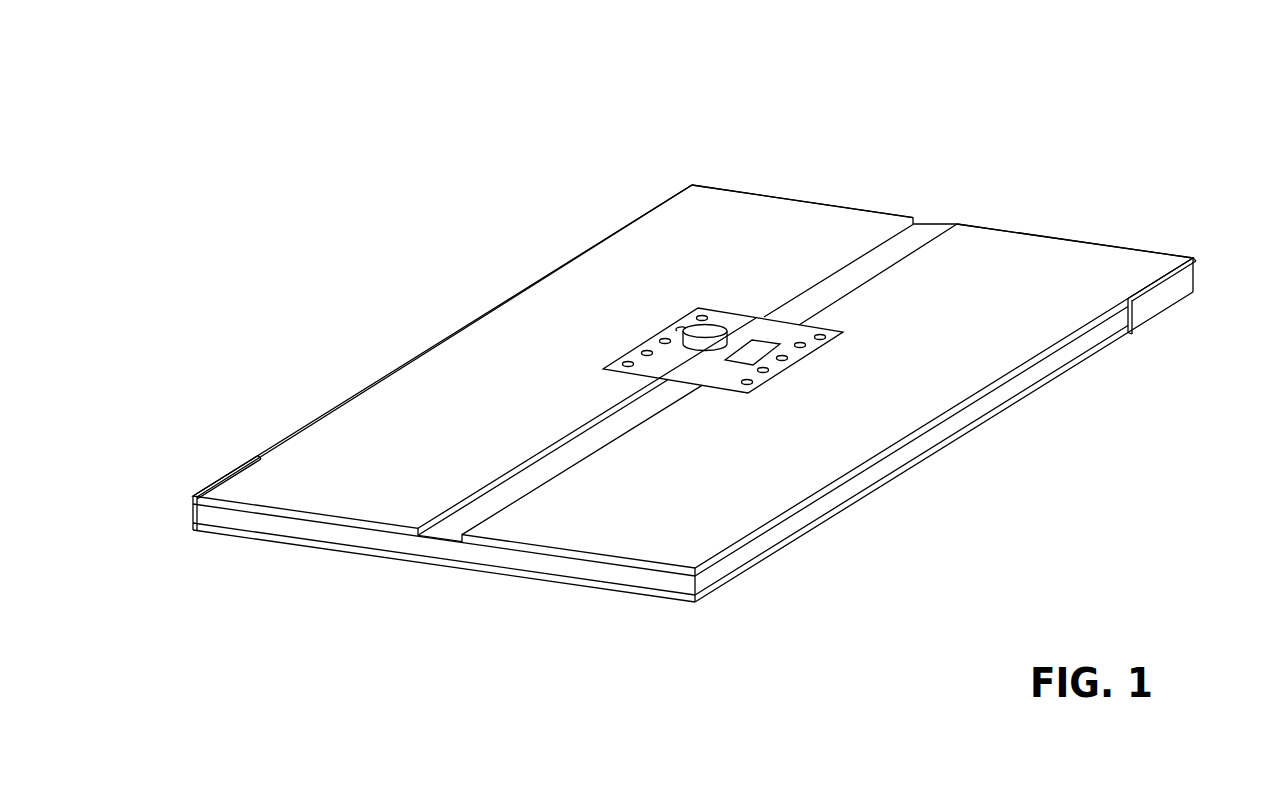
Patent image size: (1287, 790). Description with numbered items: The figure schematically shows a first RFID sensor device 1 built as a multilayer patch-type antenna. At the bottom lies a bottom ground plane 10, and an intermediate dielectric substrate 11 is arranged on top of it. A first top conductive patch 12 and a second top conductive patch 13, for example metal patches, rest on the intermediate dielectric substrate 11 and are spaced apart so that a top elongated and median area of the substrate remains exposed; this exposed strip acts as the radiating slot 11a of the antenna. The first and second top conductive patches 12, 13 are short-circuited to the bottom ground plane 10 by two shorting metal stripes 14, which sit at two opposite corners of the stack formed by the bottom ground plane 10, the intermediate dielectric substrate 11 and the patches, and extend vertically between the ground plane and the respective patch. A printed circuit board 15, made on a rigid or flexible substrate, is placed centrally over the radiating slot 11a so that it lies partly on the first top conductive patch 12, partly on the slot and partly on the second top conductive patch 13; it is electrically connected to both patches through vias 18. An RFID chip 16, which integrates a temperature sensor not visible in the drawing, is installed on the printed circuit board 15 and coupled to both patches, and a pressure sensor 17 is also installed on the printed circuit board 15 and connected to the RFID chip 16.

The first RFID sensor device 1 is at (1162, 96).
The bottom ground plane 10 is at (593, 590).
The intermediate dielectric substrate 11 is at (268, 525).
The radiating slot 11a is at (927, 228).
The first top conductive patch 12 is at (823, 215).
The second top conductive patch 13 is at (1070, 247).
The shorting metal stripes 14 is at (195, 507).
The printed circuit board 15 is at (668, 360).
The RFID chip 16 is at (748, 345).
The pressure sensor 17 is at (718, 330).
The vias 18 is at (805, 342).